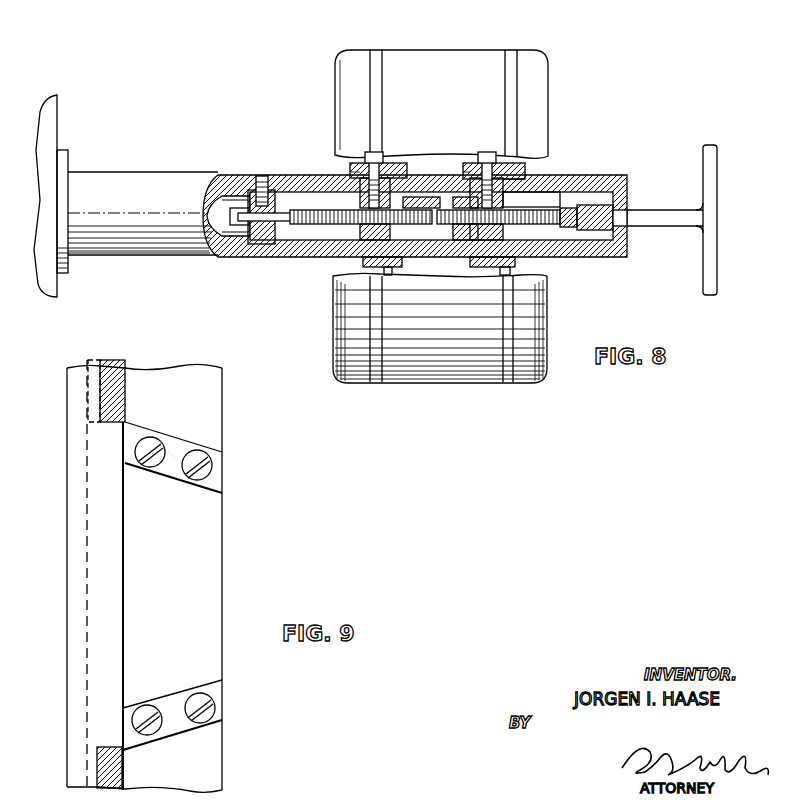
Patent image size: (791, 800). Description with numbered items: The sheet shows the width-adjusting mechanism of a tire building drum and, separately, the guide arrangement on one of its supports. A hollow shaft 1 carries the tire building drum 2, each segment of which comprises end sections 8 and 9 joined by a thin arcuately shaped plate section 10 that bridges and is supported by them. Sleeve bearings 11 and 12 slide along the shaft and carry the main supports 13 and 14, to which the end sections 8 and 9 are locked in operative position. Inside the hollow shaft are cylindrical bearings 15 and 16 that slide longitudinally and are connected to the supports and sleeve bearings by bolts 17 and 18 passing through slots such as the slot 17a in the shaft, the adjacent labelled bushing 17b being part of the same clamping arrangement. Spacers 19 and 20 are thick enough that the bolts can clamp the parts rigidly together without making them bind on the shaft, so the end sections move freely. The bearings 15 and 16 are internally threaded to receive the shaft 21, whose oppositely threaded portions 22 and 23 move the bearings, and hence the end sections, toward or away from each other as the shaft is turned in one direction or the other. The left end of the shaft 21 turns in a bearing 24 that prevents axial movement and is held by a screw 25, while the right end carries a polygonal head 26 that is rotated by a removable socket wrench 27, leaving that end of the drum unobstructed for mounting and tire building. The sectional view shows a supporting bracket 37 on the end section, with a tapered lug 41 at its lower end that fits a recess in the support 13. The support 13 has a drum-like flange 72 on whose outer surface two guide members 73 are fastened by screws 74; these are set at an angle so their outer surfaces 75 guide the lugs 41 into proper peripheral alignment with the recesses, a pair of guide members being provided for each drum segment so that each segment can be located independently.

In FIG. 8, the hollow shaft 1 is at (135, 188).
In FIG. 8, the tire building drum 2 is at (467, 47).
In FIG. 8, the end section 8 is at (343, 85).
In FIG. 8, the end section 9 is at (540, 100).
In FIG. 8, the arcuately shaped plate section 10 is at (393, 52).
In FIG. 8, the sleeve bearing 11 is at (348, 172).
In FIG. 8, the sleeve bearing 12 is at (525, 176).
In FIG. 8, the main support 13 is at (393, 160).
In FIG. 9, the main support 13 is at (68, 568).
In FIG. 8, the main support 14 is at (505, 165).
In FIG. 8, the cylindrical bearing 15 is at (345, 250).
In FIG. 8, the cylindrical bearing 16 is at (500, 238).
In FIG. 8, the bolt 17 is at (366, 152).
In FIG. 8, the slot 17a is at (325, 181).
In FIG. 8, the bushing 17b is at (542, 190).
In FIG. 8, the bolt 18 is at (485, 152).
In FIG. 8, the spacer 19 is at (365, 190).
In FIG. 8, the spacer 20 is at (497, 200).
In FIG. 8, the shaft 21 is at (553, 214).
In FIG. 8, the threaded portion 22 is at (298, 222).
In FIG. 8, the threaded portion 23 is at (545, 228).
In FIG. 8, the bearing 24 is at (255, 243).
In FIG. 8, the screw 25 is at (267, 177).
In FIG. 8, the head 26 is at (584, 213).
In FIG. 8, the socket wrench 27 is at (672, 213).
In FIG. 9, the supporting bracket 37 is at (117, 360).
In FIG. 9, the tapered lug 41 is at (93, 360).
In FIG. 9, the drum-like flange 72 is at (207, 563).
In FIG. 9, the guide member 73 is at (172, 468).
In FIG. 9, the screw 74 is at (207, 470).
In FIG. 9, the outer surface 75 is at (180, 440).